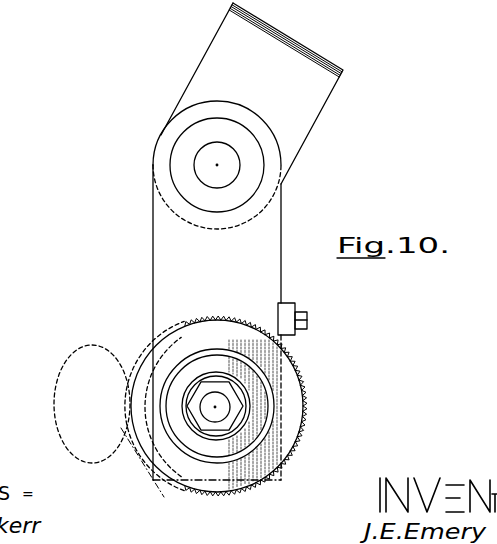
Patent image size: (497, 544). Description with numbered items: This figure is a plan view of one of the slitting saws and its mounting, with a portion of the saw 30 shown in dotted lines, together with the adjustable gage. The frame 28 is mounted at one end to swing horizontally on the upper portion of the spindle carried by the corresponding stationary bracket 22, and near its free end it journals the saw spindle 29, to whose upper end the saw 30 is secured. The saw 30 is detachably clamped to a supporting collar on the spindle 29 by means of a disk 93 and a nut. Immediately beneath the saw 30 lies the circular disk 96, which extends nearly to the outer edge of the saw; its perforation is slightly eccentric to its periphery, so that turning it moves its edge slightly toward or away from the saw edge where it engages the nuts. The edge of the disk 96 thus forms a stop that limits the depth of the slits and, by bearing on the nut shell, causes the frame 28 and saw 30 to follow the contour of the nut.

The stationary bracket 22 is at (309, 133).
The frame 28 is at (281, 275).
The saw 30 is at (198, 318).
The disk 93 is at (253, 380).
The spindle 29 is at (220, 412).
The circular disk 96 is at (158, 448).